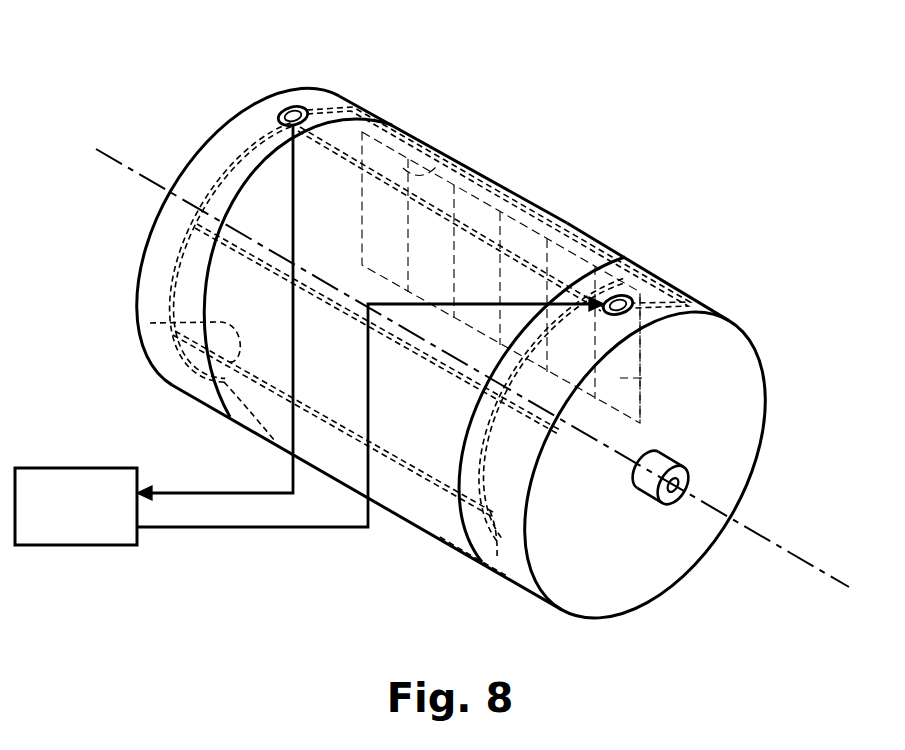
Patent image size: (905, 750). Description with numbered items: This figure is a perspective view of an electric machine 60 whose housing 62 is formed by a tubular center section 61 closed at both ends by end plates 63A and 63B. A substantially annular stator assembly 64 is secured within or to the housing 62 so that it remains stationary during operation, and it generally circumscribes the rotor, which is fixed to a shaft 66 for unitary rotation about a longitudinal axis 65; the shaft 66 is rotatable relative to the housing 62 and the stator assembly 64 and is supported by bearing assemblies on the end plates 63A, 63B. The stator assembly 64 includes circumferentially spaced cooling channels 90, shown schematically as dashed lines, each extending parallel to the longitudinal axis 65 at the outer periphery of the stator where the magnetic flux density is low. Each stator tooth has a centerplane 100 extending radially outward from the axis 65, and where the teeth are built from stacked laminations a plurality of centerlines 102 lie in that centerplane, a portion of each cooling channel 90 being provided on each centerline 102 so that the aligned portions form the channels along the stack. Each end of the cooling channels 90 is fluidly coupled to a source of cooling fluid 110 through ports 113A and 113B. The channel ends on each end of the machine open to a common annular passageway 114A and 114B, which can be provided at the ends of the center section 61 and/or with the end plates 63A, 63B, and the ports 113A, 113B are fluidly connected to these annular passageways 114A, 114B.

The electric machine 60 is at (733, 173).
The tubular center section 61 is at (567, 223).
The housing 62 is at (479, 172).
The end plate 63A is at (760, 352).
The end plate 63B is at (233, 132).
The stator assembly 64 is at (407, 523).
The longitudinal axis 65 is at (781, 545).
The shaft 66 is at (677, 463).
The cooling channels 90 is at (297, 280).
The centerplane 100 is at (642, 378).
The centerlines 102 is at (454, 186).
The source of cooling fluid 110 is at (83, 546).
The port 113A is at (616, 298).
The port 113B is at (294, 116).
The annular passageway 114A is at (273, 443).
The annular passageway 114B is at (150, 323).